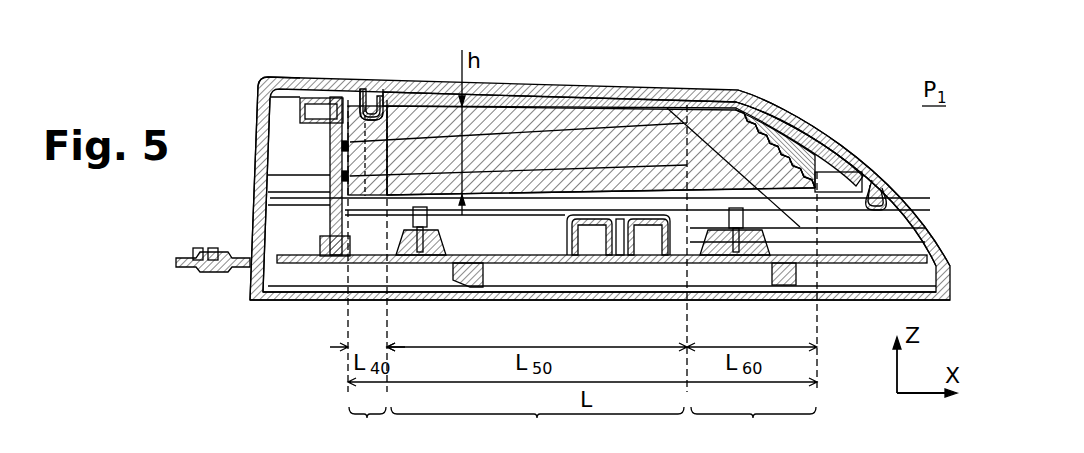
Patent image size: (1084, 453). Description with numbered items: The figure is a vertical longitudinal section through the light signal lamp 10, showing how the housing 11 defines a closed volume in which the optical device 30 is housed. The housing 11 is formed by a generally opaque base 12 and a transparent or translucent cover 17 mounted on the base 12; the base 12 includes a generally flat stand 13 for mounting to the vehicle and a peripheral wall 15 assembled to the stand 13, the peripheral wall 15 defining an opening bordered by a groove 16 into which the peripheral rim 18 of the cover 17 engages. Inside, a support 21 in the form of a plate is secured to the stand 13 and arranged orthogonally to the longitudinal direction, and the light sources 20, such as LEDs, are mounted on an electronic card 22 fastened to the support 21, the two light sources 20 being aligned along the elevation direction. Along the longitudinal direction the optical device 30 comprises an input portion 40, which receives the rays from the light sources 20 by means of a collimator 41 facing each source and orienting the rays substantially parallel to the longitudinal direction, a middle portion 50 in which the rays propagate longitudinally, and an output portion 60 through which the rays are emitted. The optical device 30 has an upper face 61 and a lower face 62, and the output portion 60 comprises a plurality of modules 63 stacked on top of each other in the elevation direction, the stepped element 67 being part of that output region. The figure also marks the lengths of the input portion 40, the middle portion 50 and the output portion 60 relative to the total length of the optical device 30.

The light signal lamp 10 is at (208, 132).
The housing 11 is at (240, 213).
The base 12 is at (257, 188).
The stand 13 is at (547, 263).
The peripheral wall 15 is at (853, 300).
The groove 16 is at (358, 110).
The cover 17 is at (847, 147).
The peripheral rim 18 is at (373, 96).
The light source 20 is at (337, 144).
The support 21 is at (332, 216).
The electronic card 22 is at (342, 118).
The optical device 30 is at (602, 135).
The input portion 40 is at (367, 427).
The collimator 41 is at (389, 147).
The middle portion 50 is at (537, 427).
The output portion 60 is at (753, 427).
The upper face 61 is at (573, 106).
The lower face 62 is at (535, 192).
The module 63 is at (780, 148).
The step portion 67 is at (747, 123).